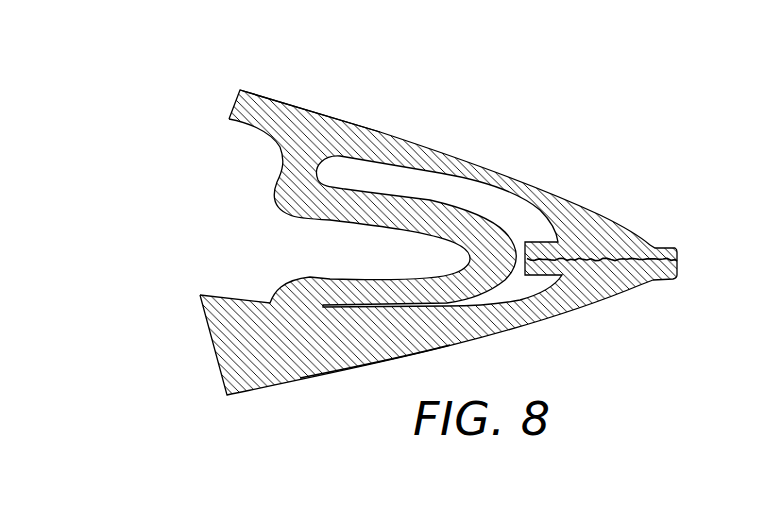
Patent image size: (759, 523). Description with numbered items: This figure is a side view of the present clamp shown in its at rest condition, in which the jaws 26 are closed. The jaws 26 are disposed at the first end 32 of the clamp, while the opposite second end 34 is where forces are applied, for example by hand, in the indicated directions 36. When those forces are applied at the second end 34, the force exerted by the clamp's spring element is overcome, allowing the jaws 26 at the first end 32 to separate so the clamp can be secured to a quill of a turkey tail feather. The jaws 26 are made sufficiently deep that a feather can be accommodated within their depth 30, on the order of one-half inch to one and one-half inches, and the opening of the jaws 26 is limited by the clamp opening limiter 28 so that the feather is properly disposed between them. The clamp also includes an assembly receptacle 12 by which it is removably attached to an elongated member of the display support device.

The assembly receptacle 12 is at (445, 246).
The jaws 26 is at (673, 247).
The clamp opening limiter 28 is at (516, 250).
The depth 30 is at (678, 245).
The first end 32 is at (656, 317).
The second end 34 is at (180, 211).
The directions 36 is at (287, 88).